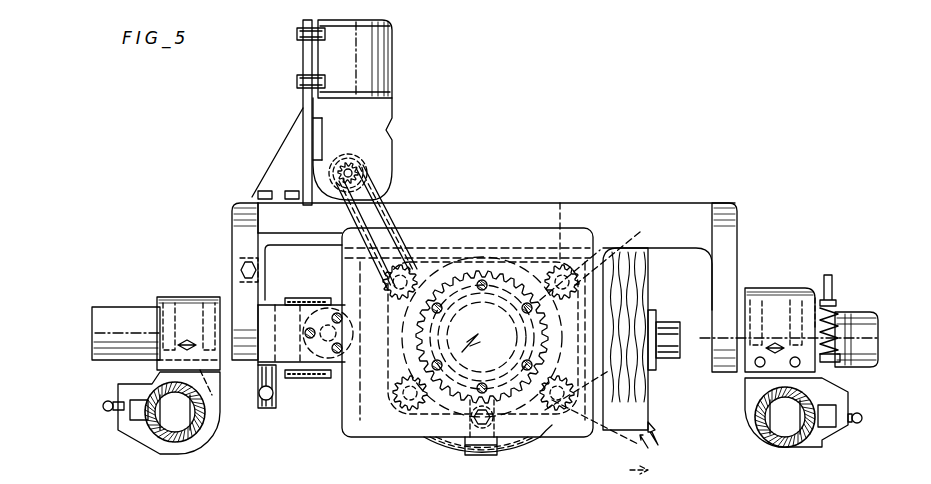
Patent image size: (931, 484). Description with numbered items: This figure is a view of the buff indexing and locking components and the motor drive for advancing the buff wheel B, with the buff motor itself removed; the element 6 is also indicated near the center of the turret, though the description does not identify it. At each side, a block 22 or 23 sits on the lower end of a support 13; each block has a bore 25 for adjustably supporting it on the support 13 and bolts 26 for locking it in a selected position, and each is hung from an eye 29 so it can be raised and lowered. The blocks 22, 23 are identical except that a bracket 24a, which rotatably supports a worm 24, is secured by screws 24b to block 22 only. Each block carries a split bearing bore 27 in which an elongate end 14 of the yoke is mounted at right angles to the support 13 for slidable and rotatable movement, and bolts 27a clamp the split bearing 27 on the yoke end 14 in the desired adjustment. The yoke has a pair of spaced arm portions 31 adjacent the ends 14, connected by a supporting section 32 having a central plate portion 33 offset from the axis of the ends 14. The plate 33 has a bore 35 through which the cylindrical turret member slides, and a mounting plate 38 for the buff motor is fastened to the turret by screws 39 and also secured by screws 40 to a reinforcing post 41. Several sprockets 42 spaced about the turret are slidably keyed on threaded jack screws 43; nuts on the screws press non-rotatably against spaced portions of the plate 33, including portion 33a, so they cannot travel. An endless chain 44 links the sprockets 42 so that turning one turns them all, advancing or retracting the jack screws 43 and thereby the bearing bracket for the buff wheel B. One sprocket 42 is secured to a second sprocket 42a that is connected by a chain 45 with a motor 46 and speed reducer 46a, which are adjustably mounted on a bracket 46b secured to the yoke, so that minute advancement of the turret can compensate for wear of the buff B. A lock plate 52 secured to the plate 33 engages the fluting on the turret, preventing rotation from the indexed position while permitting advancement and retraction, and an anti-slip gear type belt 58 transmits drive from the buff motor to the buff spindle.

The output shaft axis 6 is at (466, 349).
The support 13 is at (172, 442).
The elongate end of the yoke 14 is at (118, 305).
The block 22 is at (772, 452).
The block 23 is at (206, 440).
The worm 24 is at (838, 332).
The bracket 24a is at (818, 294).
The screws 24b is at (790, 366).
The bore 25 is at (165, 440).
The bolts 26 is at (106, 414).
The split bearing bore 27 is at (252, 408).
The bolts 27a is at (215, 300).
The eye 29 is at (190, 340).
The arm portion 31 is at (237, 226).
The supporting section 32 is at (606, 213).
The plate portion 33 is at (430, 451).
The spaced portion of the plate 33a is at (536, 445).
The bore 35 is at (545, 340).
The mounting plate 38 is at (358, 438).
The screws 39 is at (476, 285).
The screws 40 is at (334, 320).
The reinforcing post 41 is at (304, 378).
The sprocket 42 is at (598, 250).
The second sprocket 42a is at (380, 282).
The jack screw 43 is at (560, 203).
The endless chain 44 is at (495, 455).
The chain 45 is at (378, 198).
The motor 46 is at (398, 70).
The speed reducer 46a is at (382, 143).
The bracket 46b is at (290, 146).
The lock plate 52 is at (475, 455).
The anti-slip gear type belt 58 is at (322, 375).
The buff wheel B is at (659, 448).